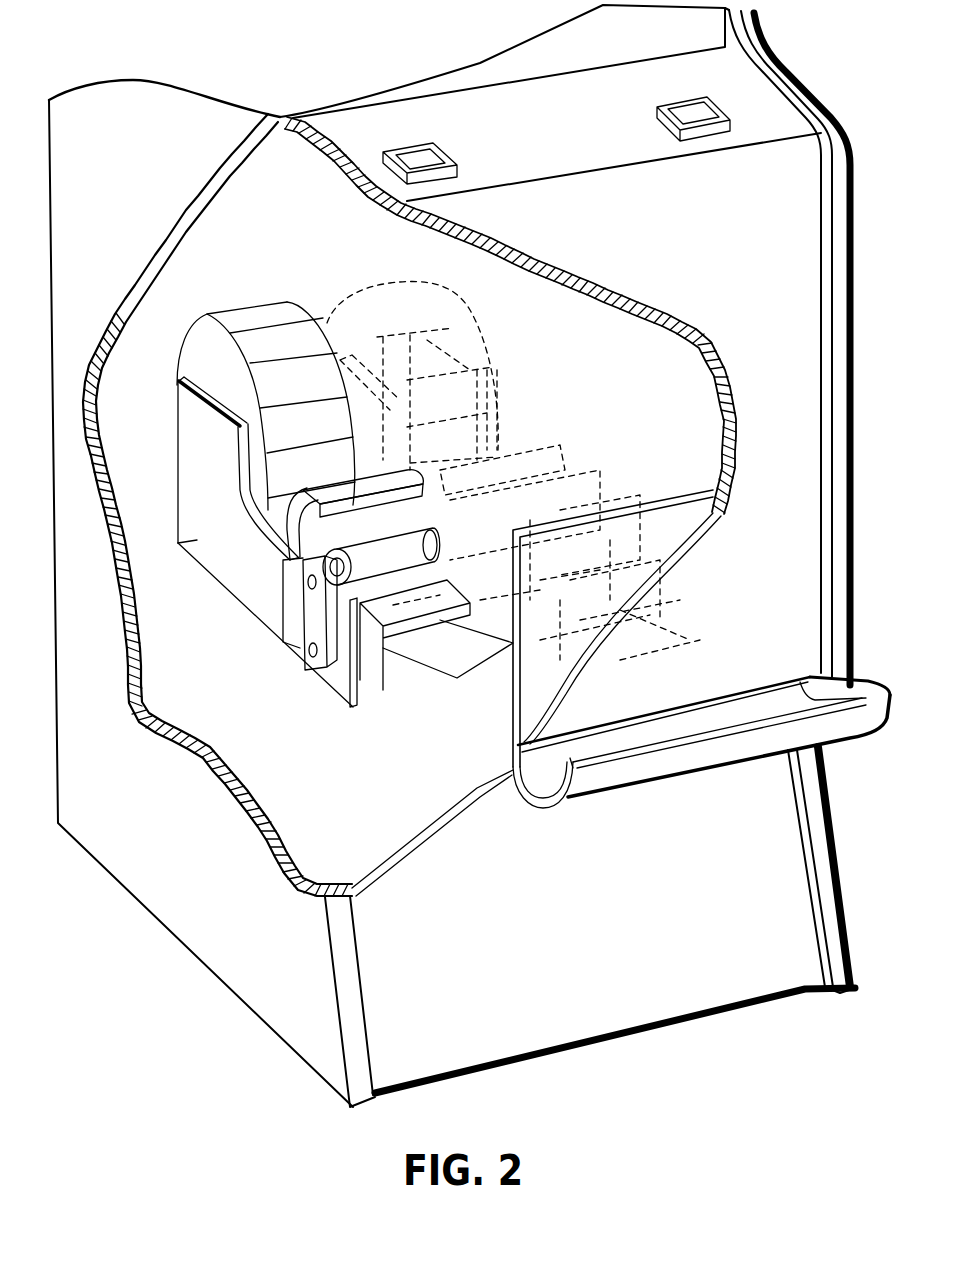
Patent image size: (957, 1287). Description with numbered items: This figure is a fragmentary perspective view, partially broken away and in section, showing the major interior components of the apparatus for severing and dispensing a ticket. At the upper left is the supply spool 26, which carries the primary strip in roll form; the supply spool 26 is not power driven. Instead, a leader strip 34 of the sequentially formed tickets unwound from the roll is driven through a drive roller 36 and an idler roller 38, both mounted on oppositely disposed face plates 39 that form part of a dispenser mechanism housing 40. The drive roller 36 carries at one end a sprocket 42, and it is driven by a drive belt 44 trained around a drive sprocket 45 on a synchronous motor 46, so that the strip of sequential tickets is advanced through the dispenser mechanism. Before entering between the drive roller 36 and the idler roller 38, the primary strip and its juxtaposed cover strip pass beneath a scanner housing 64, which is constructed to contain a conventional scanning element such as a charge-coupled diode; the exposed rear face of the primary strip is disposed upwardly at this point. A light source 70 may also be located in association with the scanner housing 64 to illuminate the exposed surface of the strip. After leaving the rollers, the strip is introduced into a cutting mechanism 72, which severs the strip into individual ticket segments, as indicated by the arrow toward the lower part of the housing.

The supply spool 26 is at (193, 343).
The leader strip 34 is at (268, 537).
The drive roller 36 is at (375, 550).
The idler roller 38 is at (486, 640).
The face plates 39 is at (187, 545).
The dispenser mechanism housing 40 is at (165, 530).
The sprocket 42 is at (300, 585).
The drive belt 44 is at (295, 648).
The drive sprocket 45 is at (305, 634).
The synchronous motor 46 is at (350, 660).
The scanner housing 64 is at (348, 490).
The light source 70 is at (300, 495).
The cutting mechanism 72 is at (432, 700).